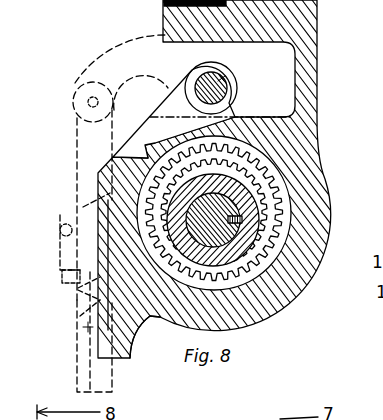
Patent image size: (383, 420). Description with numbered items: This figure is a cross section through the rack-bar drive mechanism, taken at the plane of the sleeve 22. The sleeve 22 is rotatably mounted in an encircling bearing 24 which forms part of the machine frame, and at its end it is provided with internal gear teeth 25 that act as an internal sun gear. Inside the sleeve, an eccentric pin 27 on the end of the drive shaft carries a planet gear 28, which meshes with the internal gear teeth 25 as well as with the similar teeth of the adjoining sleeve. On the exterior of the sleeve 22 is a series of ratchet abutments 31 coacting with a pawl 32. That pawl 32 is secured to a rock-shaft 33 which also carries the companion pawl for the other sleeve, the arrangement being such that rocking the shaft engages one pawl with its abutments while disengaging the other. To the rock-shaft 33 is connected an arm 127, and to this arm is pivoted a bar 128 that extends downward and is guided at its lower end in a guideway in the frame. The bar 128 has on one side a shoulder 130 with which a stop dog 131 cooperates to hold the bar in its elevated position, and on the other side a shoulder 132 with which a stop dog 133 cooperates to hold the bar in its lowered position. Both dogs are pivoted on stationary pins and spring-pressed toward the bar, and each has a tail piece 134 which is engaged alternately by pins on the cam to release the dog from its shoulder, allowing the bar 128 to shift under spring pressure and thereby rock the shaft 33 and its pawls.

The sleeve 22 is at (279, 182).
The encircling bearing 24 is at (301, 289).
The internal gear teeth 25 is at (279, 200).
The eccentric pin 27 is at (243, 262).
The planet gear 28 is at (232, 238).
The ratchet abutments 31 is at (147, 313).
The pawl 32 is at (158, 140).
The rock-shaft 33 is at (240, 96).
The arm 127 is at (110, 57).
The bar 128 is at (90, 149).
The shoulder 130 is at (80, 316).
The stop dog 131 is at (78, 290).
The shoulder 132 is at (78, 288).
The stop dog 133 is at (62, 275).
The tail piece 134 is at (96, 195).